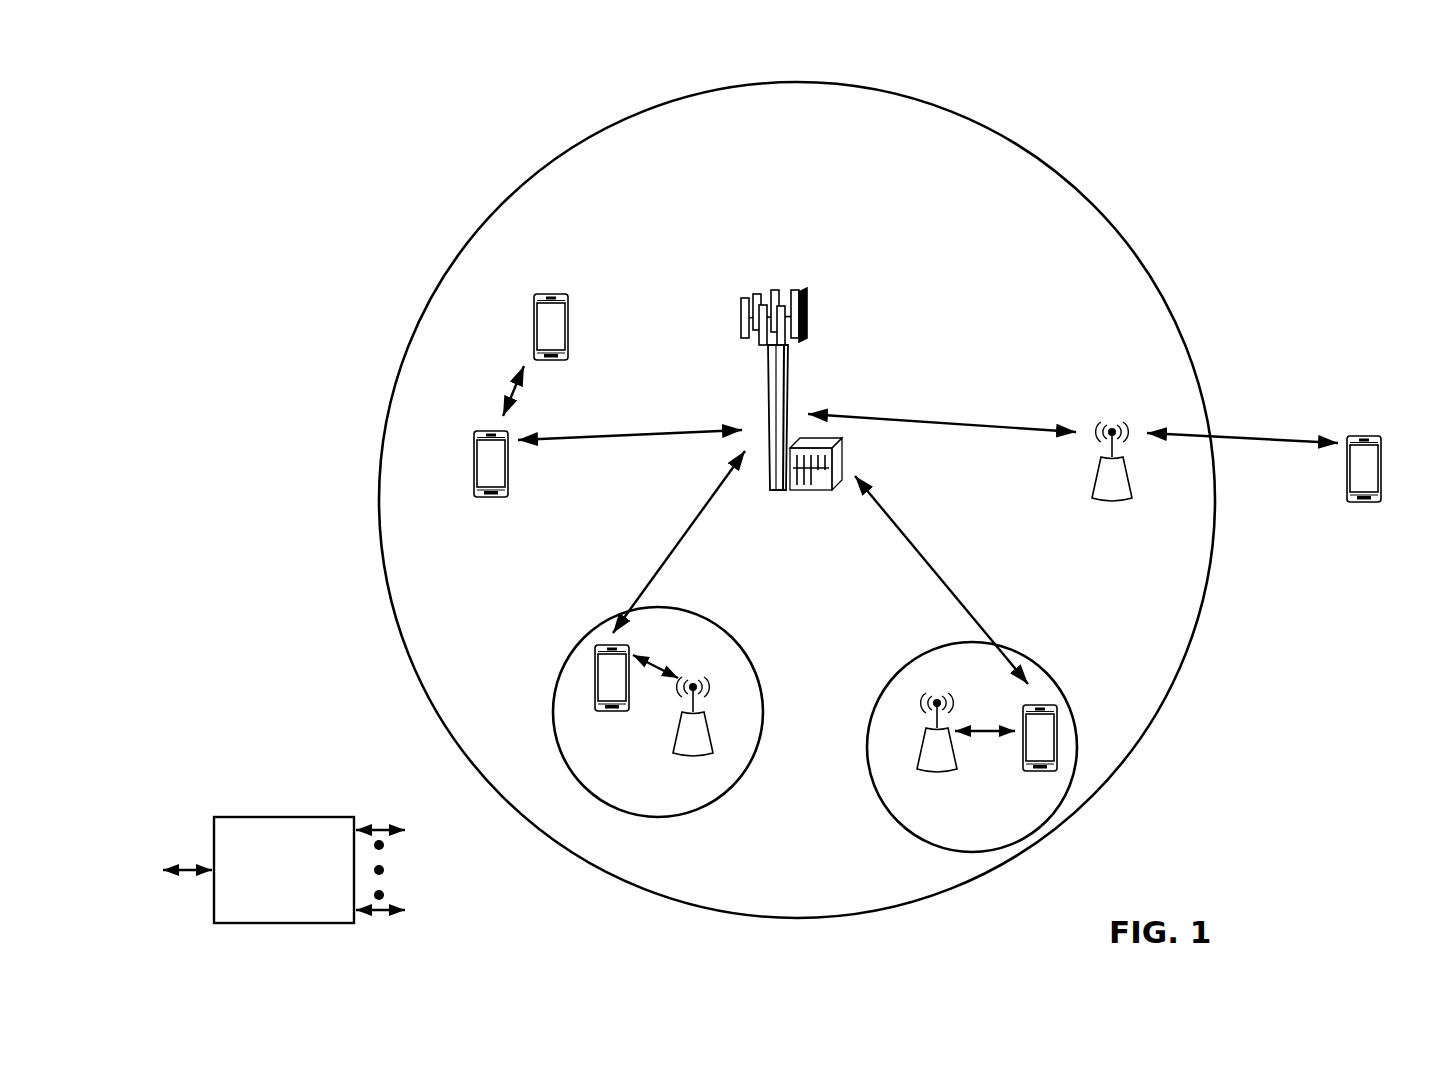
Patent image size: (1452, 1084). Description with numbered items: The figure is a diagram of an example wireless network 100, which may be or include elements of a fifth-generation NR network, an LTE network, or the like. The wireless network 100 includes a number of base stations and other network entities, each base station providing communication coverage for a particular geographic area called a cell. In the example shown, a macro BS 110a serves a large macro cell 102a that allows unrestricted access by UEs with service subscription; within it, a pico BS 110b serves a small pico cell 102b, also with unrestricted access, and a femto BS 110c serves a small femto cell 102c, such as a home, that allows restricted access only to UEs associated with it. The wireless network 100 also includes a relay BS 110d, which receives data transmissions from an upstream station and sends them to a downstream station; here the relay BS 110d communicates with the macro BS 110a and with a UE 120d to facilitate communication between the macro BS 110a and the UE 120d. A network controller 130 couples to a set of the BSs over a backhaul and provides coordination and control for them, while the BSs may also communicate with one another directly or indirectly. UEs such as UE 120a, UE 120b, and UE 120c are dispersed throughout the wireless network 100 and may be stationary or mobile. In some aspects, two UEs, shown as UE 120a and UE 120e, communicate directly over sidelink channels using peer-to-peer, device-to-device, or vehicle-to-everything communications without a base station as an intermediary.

The wireless network 100 is at (258, 77).
The macro cell 102a is at (1076, 188).
The pico cell 102b is at (750, 655).
The femto cell 102c is at (908, 657).
The macro BS 110a is at (785, 286).
The pico BS 110b is at (714, 738).
The femto BS 110c is at (921, 762).
The relay BS 110d is at (1113, 421).
The UE 120a is at (474, 458).
The UE 120b is at (599, 712).
The UE 120c is at (1024, 774).
The UE 120d is at (1376, 436).
The UE 120e is at (534, 316).
The network controller 130 is at (282, 815).